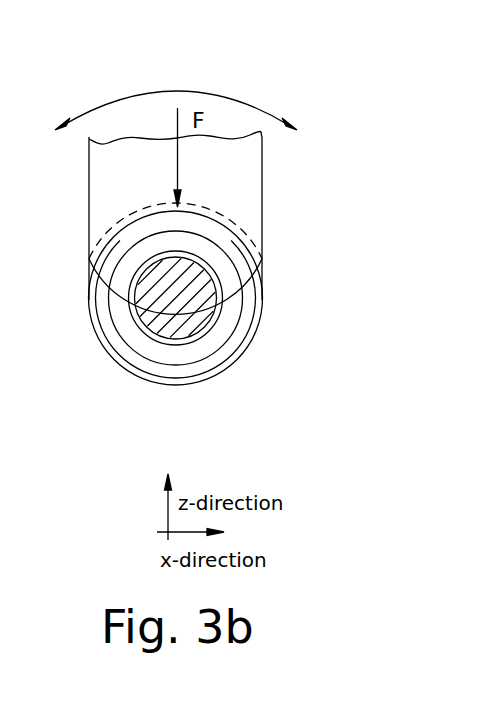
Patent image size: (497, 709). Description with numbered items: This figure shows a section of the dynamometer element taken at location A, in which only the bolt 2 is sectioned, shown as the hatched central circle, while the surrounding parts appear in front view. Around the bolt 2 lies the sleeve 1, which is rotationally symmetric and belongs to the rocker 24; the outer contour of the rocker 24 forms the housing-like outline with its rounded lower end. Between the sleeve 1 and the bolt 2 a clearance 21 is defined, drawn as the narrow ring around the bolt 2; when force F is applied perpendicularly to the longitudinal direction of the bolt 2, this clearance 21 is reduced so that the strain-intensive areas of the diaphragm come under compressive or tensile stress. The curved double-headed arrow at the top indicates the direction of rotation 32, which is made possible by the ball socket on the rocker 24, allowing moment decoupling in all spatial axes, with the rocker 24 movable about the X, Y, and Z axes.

The rocker 24 is at (122, 185).
The sleeve 1 is at (140, 343).
The clearance 21 is at (170, 347).
The bolt 2 is at (193, 301).
The direction of rotation 32 is at (137, 95).